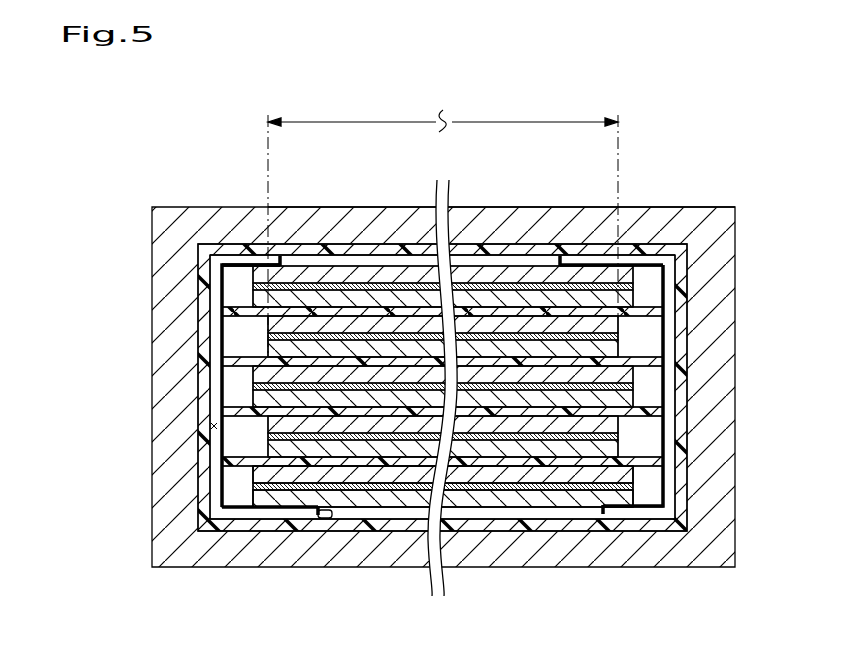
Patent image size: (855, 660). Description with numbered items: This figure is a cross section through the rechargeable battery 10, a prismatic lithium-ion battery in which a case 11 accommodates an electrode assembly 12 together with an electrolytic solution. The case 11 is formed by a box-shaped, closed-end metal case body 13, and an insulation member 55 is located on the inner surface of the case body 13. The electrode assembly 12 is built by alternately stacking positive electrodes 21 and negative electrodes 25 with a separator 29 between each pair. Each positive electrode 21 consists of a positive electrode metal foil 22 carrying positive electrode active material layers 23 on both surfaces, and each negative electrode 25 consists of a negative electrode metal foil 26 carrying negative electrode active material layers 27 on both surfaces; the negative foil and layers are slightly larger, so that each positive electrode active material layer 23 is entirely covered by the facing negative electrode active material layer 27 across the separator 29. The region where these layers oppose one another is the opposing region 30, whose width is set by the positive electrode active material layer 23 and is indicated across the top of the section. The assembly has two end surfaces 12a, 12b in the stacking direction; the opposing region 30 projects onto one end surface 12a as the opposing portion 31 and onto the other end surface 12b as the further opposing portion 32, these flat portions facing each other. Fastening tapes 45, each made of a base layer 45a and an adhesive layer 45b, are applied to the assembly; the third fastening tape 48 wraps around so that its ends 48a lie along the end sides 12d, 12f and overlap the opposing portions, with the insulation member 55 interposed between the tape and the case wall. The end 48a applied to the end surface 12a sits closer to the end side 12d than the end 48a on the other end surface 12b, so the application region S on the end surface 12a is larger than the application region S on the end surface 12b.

The rechargeable battery 10 is at (181, 165).
The case 11 is at (277, 208).
The electrode assembly 12 is at (415, 510).
The end surface 12a is at (388, 532).
The end surface 12b is at (378, 244).
The end side 12d is at (672, 354).
The end side 12f is at (211, 417).
The case body 13 is at (200, 209).
The positive electrode 21 is at (354, 386).
The positive electrode metal foil 22 is at (268, 336).
The positive electrode active material layer 23 is at (268, 326).
The negative electrode 25 is at (354, 372).
The negative electrode metal foil 26 is at (253, 286).
The negative electrode active material layer 27 is at (253, 273).
The separator 29 is at (265, 318).
The opposing region 30 is at (443, 225).
The opposing portion 31 is at (333, 518).
The further opposing portion 32 is at (418, 244).
The fastening tape 45 is at (340, 480).
The base layer 45a is at (222, 462).
The adhesive layer 45b is at (222, 481).
The third fastening tape 48 is at (445, 381).
The end 48a is at (283, 257).
The insulation member 55 is at (222, 266).
The application region S is at (211, 427).